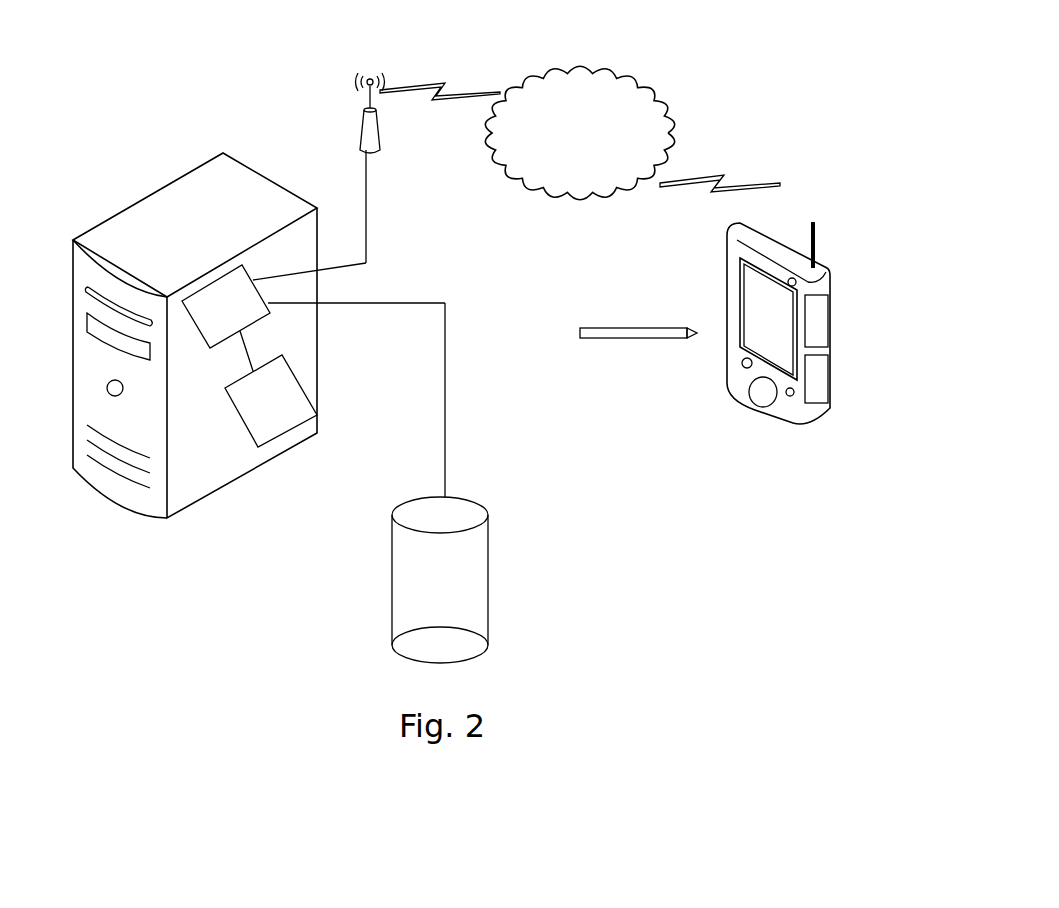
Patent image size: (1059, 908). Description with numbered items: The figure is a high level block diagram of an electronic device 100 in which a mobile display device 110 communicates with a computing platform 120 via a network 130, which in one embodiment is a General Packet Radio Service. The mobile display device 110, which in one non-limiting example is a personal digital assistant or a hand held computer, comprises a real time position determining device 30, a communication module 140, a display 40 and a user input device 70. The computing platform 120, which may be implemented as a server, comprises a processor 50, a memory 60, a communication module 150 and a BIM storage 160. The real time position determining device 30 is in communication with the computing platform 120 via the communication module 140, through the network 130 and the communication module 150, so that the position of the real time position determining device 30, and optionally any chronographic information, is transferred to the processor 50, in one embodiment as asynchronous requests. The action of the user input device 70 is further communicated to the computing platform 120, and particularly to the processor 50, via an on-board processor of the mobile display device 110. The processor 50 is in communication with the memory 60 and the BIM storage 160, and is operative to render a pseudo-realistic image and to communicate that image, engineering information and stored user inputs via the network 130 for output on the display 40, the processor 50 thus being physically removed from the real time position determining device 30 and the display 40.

The electronic device 100 is at (173, 61).
The computing platform 120 is at (168, 185).
The processor 50 is at (198, 332).
The memory 60 is at (302, 423).
The communication module 150 is at (358, 142).
The network 130 is at (530, 187).
The BIM storage 160 is at (488, 578).
The mobile display device 110 is at (784, 338).
The display 40 is at (755, 318).
The real time position determining device 30 is at (818, 325).
The communication module 140 is at (818, 385).
The user input device 70 is at (633, 338).